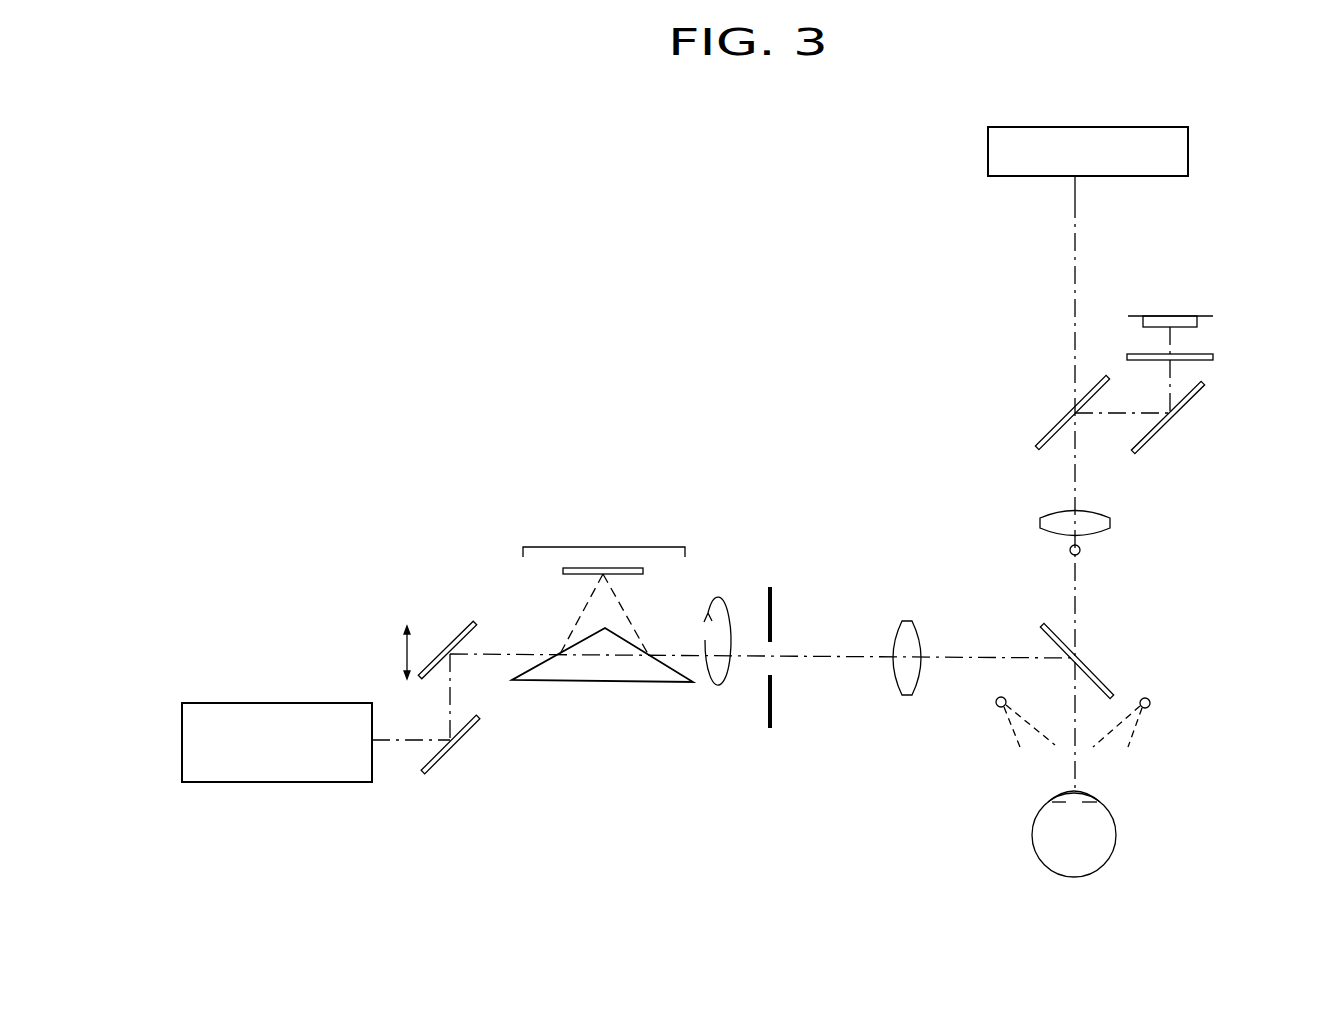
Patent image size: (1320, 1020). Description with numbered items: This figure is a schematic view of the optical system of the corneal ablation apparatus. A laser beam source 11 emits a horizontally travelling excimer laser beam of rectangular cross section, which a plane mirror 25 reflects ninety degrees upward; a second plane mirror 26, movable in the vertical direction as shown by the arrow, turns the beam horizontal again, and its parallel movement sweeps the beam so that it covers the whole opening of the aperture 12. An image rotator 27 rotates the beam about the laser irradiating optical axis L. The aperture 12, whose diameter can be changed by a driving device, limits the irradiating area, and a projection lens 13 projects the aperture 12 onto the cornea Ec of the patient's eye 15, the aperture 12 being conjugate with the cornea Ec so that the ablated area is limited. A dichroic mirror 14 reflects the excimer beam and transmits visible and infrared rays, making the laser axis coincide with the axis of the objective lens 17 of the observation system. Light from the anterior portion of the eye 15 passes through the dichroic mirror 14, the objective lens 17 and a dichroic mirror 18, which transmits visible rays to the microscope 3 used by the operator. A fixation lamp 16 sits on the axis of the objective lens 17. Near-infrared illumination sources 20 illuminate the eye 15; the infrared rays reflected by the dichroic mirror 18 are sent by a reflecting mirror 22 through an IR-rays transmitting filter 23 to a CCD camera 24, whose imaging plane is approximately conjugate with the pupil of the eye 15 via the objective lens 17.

The microscope 3 is at (1133, 127).
The laser beam source 11 is at (260, 782).
The aperture 12 is at (770, 602).
The projection lens 13 is at (907, 635).
The dichroic mirror 14 is at (1085, 665).
The patient's eye 15 is at (1095, 837).
The fixation lamp 16 is at (1082, 548).
The objective lens 17 is at (1057, 517).
The dichroic mirror 18 is at (1048, 427).
The IR-rays illumination light source 20 is at (997, 705).
The reflecting mirror 22 is at (1162, 429).
The IR-rays transmitting filter 23 is at (1197, 362).
The CCD camera 24 is at (1177, 313).
The plane mirror 25 is at (440, 768).
The plane mirror 26 is at (445, 648).
The image rotator 27 is at (593, 545).
The optical axis L is at (837, 660).
The cornea Ec is at (1063, 793).